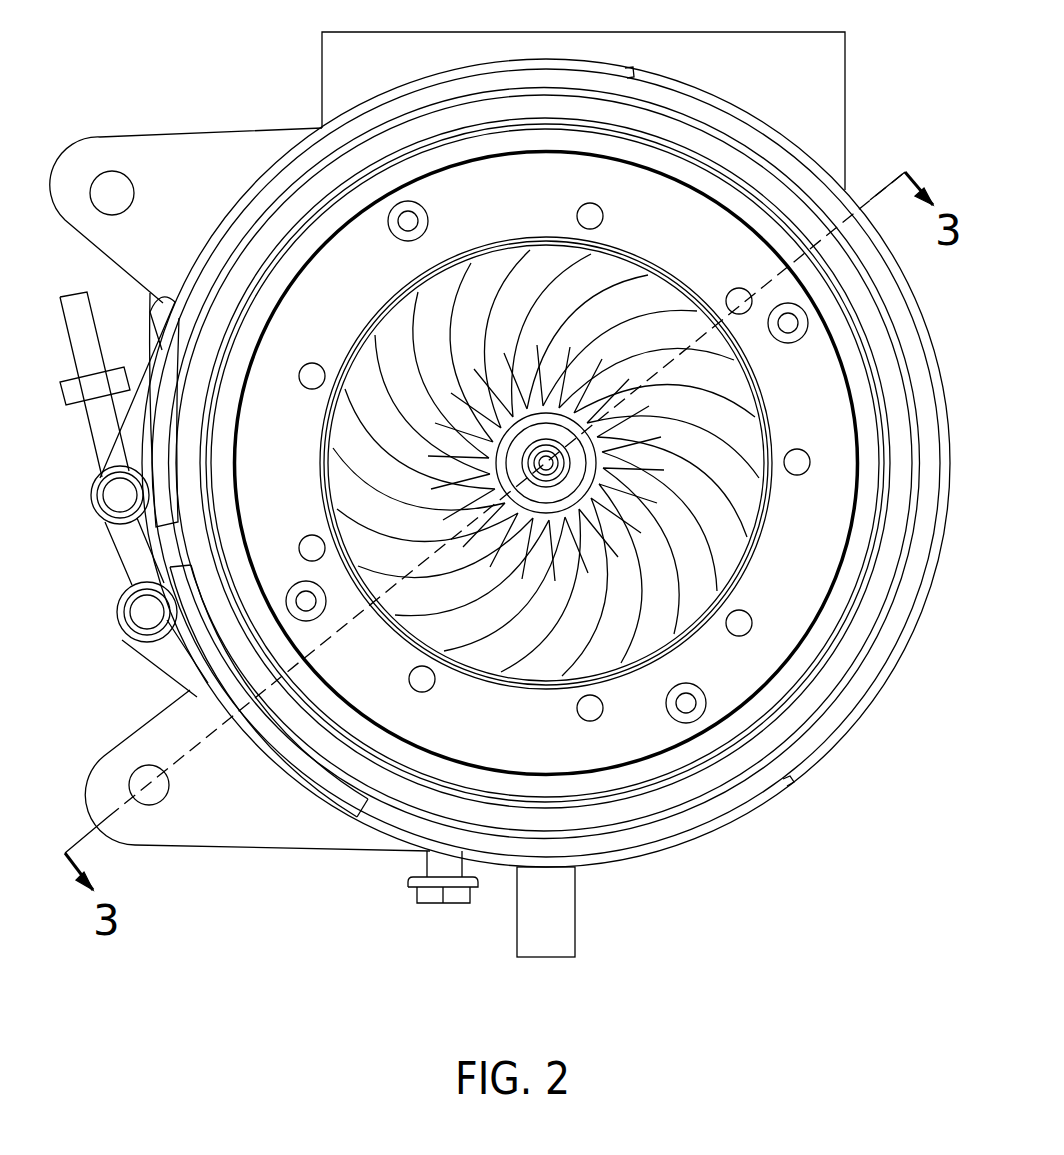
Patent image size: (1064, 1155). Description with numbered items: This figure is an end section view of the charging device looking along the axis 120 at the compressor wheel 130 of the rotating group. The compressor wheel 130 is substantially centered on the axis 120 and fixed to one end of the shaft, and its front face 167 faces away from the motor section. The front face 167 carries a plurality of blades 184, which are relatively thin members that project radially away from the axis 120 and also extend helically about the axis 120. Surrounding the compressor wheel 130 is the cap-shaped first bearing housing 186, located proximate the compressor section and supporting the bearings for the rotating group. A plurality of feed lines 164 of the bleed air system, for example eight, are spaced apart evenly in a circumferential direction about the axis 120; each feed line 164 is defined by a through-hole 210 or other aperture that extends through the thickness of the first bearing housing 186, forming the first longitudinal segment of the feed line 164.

The axis 120 is at (549, 478).
The compressor wheel 130 is at (546, 456).
The feed line 164 is at (813, 468).
The front face 167 is at (525, 262).
The blades 184 is at (668, 622).
The first bearing housing 186 is at (425, 738).
The through-hole 210 is at (800, 450).